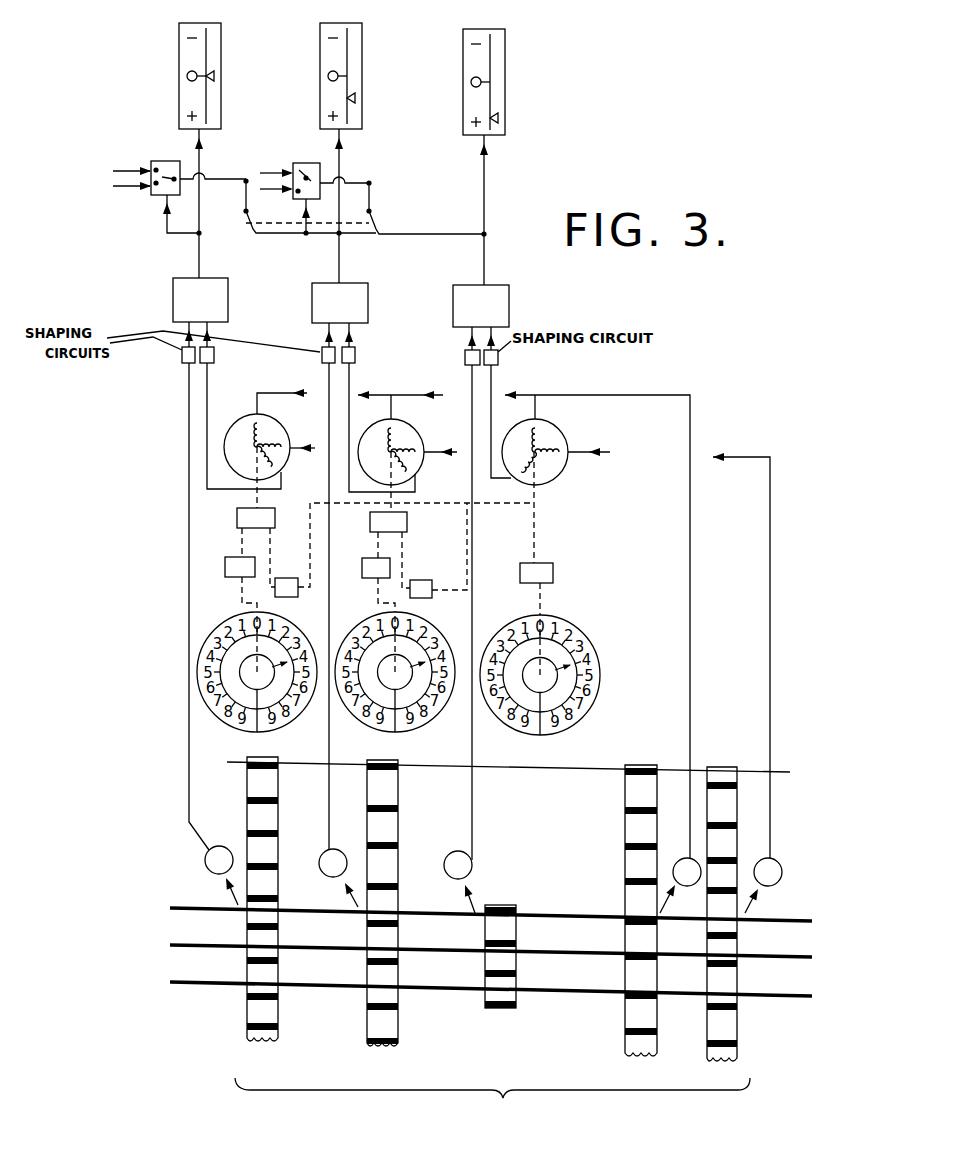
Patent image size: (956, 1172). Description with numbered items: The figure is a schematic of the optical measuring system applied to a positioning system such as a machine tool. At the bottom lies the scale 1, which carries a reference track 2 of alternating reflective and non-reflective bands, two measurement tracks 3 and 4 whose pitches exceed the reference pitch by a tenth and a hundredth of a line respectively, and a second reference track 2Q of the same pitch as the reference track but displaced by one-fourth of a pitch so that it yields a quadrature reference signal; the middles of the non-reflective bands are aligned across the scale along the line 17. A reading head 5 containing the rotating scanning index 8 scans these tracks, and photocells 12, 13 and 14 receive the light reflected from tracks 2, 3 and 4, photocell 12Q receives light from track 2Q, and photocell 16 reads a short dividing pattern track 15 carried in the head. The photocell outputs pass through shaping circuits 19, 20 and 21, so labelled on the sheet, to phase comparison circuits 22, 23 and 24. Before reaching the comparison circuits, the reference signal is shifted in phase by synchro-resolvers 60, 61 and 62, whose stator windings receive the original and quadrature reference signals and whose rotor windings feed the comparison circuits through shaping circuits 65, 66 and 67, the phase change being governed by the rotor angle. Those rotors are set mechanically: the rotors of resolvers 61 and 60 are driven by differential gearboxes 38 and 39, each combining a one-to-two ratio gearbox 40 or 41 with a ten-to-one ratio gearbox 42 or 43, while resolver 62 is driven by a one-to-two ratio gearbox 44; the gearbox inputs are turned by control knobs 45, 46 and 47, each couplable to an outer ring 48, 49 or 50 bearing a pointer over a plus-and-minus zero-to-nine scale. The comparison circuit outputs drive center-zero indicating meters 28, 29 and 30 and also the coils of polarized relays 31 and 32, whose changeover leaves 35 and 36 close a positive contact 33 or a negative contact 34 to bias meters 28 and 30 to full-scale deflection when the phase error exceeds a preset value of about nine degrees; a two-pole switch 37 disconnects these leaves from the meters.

The scale 1 is at (492, 1104).
The reference pattern track 2 is at (625, 1038).
The second reference track 2Q is at (738, 1052).
The measurement track 3 is at (398, 1023).
The measurement track 4 is at (278, 1003).
The reading head 5 is at (218, 991).
The scanning index 8 is at (750, 998).
The photocell 12 is at (675, 868).
The photocell 12Q is at (771, 884).
The photocell 13 is at (328, 860).
The photocell 14 is at (212, 867).
The dividing pattern track 15 is at (516, 1000).
The photocell 16 is at (470, 866).
The line 17 is at (564, 774).
The shaping circuit 19 is at (322, 357).
The shaping circuit 20 is at (182, 355).
The shaping circuit 21 is at (465, 361).
The phase comparison circuit 22 is at (330, 303).
The phase comparison circuit 23 is at (183, 300).
The phase comparison circuit 24 is at (466, 306).
The center-zero indicating meter 28 is at (356, 50).
The center-zero indicating meter 29 is at (215, 50).
The center-zero indicating meter 30 is at (506, 57).
The polarized relay 31 is at (297, 162).
The polarized relay 32 is at (154, 160).
The contact 33 is at (141, 168).
The contact 34 is at (125, 192).
The changeover contact leaf 35 is at (169, 160).
The changeover contact leaf 36 is at (309, 162).
The two-pole switch 37 is at (249, 228).
The differential gearbox 38 is at (245, 518).
The differential gearbox 39 is at (393, 521).
The 1:2 ratio gearbox 40 is at (230, 568).
The 1:2 ratio gearbox 41 is at (372, 566).
The 10:1 ratio gearbox 42 is at (284, 578).
The 10:1 ratio gearbox 43 is at (420, 580).
The 1:2 ratio gearbox 44 is at (545, 576).
The control knob 45 is at (250, 681).
The control knob 46 is at (388, 681).
The control knob 47 is at (535, 684).
The outer ring 48 is at (275, 690).
The outer ring 49 is at (412, 690).
The outer ring 50 is at (556, 691).
The synchro-resolver 60 is at (416, 430).
The synchro-resolver 61 is at (248, 432).
The synchro-resolver 62 is at (565, 437).
The shaping circuit 65 is at (355, 356).
The shaping circuit 66 is at (214, 355).
The shaping circuit 67 is at (498, 358).